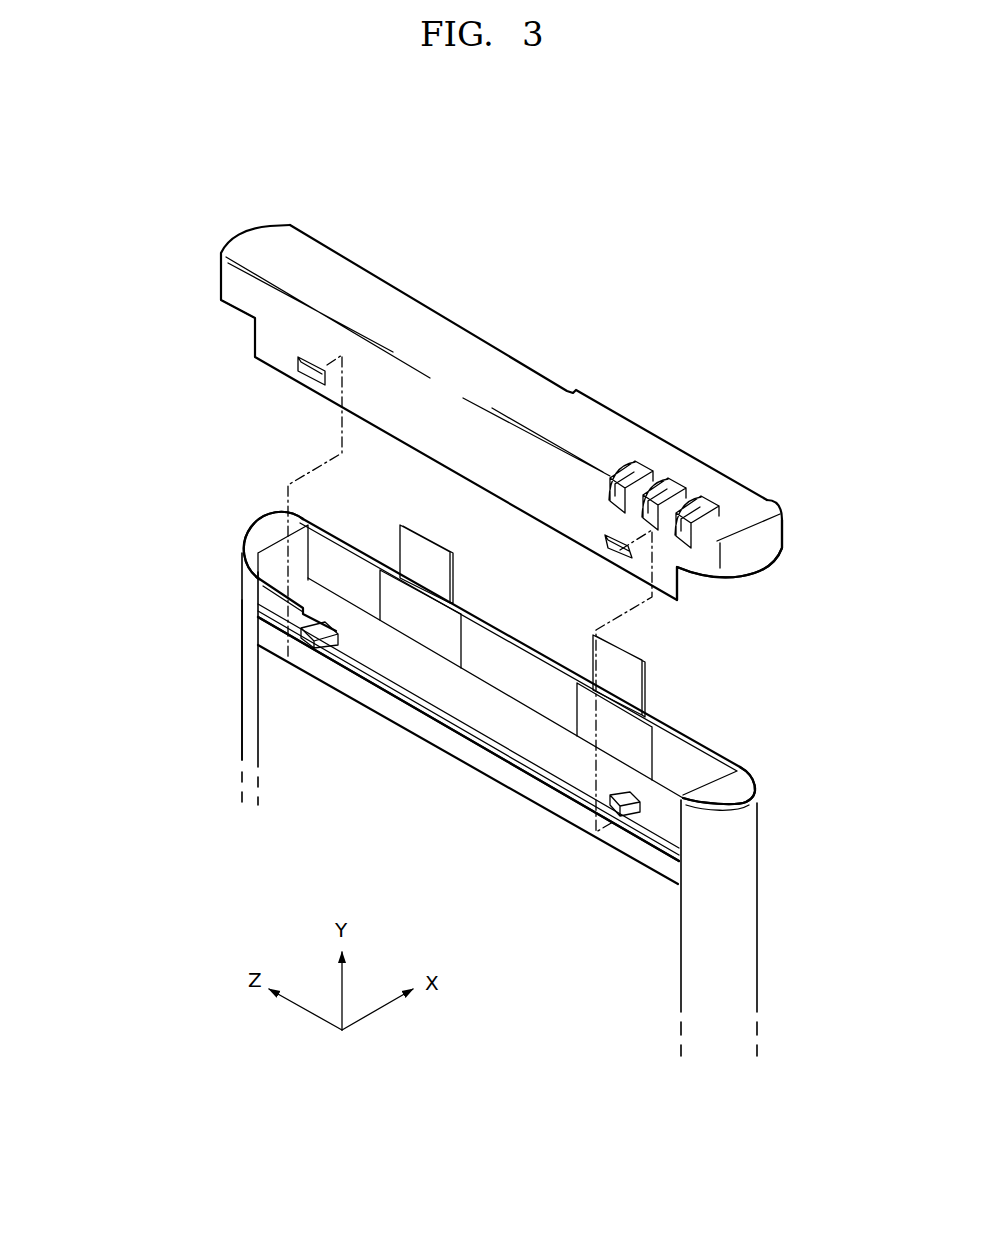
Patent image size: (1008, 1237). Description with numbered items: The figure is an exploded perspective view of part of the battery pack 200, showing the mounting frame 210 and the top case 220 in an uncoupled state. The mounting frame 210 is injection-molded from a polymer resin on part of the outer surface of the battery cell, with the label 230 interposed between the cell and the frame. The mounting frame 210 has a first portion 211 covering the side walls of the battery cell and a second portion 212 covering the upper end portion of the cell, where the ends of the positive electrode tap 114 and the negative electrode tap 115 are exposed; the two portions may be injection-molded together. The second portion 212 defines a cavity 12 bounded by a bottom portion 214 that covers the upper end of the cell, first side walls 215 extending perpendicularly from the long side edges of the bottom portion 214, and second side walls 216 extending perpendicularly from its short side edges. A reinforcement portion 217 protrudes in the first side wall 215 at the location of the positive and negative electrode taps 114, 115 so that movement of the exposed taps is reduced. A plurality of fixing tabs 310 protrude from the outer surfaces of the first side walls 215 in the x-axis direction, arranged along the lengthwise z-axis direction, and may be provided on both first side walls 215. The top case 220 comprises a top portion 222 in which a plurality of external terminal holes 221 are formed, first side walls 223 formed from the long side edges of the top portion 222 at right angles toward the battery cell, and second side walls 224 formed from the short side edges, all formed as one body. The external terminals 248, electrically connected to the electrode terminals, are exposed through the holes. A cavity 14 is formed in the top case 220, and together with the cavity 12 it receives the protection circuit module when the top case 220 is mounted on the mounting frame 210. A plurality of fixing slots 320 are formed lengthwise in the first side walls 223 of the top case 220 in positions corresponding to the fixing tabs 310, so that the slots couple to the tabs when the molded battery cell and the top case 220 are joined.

The battery pack 200 is at (150, 294).
The mounting frame 210 is at (186, 515).
The top case 220 is at (416, 279).
The external terminal holes 221 is at (672, 470).
The top portion 222 is at (472, 362).
The first side walls 223 is at (262, 343).
The second side walls 224 is at (780, 540).
The external terminals 248 is at (630, 466).
The fixing slots 320 is at (289, 375).
The fixing tabs 310 is at (305, 630).
The cavity 14 is at (703, 590).
The cavity 12 is at (538, 746).
The positive electrode tap 114 is at (458, 573).
The negative electrode tap 115 is at (648, 686).
The first portion 211 is at (245, 684).
The second portion 212 is at (770, 796).
The bottom portion 214 is at (458, 708).
The first side walls 215 is at (532, 647).
The second side walls 216 is at (248, 556).
The reinforcement portion 217 is at (388, 590).
The label 230 is at (290, 741).